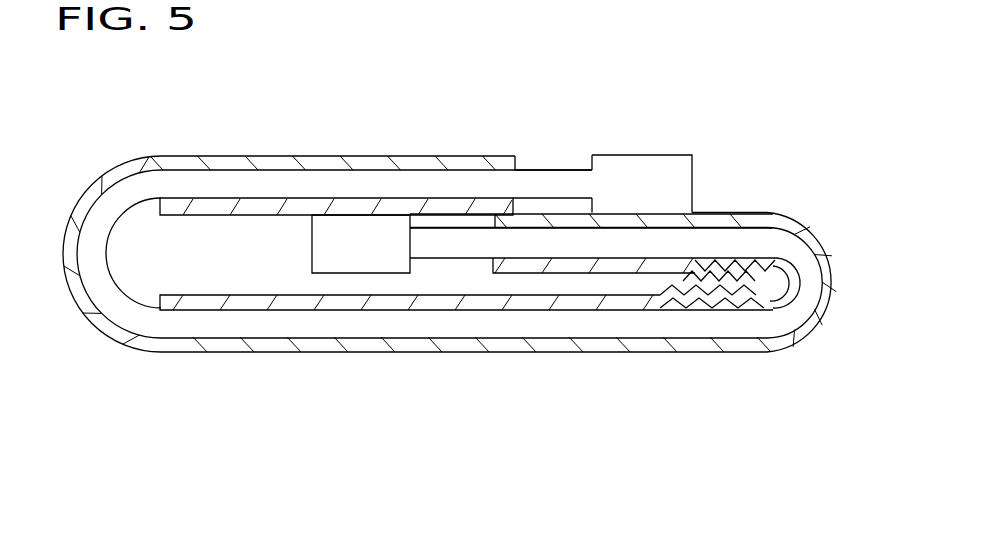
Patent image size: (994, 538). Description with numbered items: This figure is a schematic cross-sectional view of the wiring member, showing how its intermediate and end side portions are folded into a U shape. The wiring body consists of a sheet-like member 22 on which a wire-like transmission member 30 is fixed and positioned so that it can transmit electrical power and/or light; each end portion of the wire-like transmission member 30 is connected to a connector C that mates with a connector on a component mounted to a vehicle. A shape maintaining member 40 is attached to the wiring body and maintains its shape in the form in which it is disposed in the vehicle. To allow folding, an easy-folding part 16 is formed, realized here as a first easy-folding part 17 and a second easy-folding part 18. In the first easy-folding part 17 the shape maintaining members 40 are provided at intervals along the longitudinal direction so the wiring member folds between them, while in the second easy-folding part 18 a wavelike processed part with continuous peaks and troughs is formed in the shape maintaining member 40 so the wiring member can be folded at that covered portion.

The sheet-like member 22 is at (105, 328).
The wire-like transmission member 30 is at (547, 185).
The shape maintaining member 40 is at (245, 205).
The connector C is at (641, 167).
The easy-folding part 16 is at (593, 250).
The first easy-folding part 17 is at (158, 253).
The second easy-folding part 18 is at (747, 280).